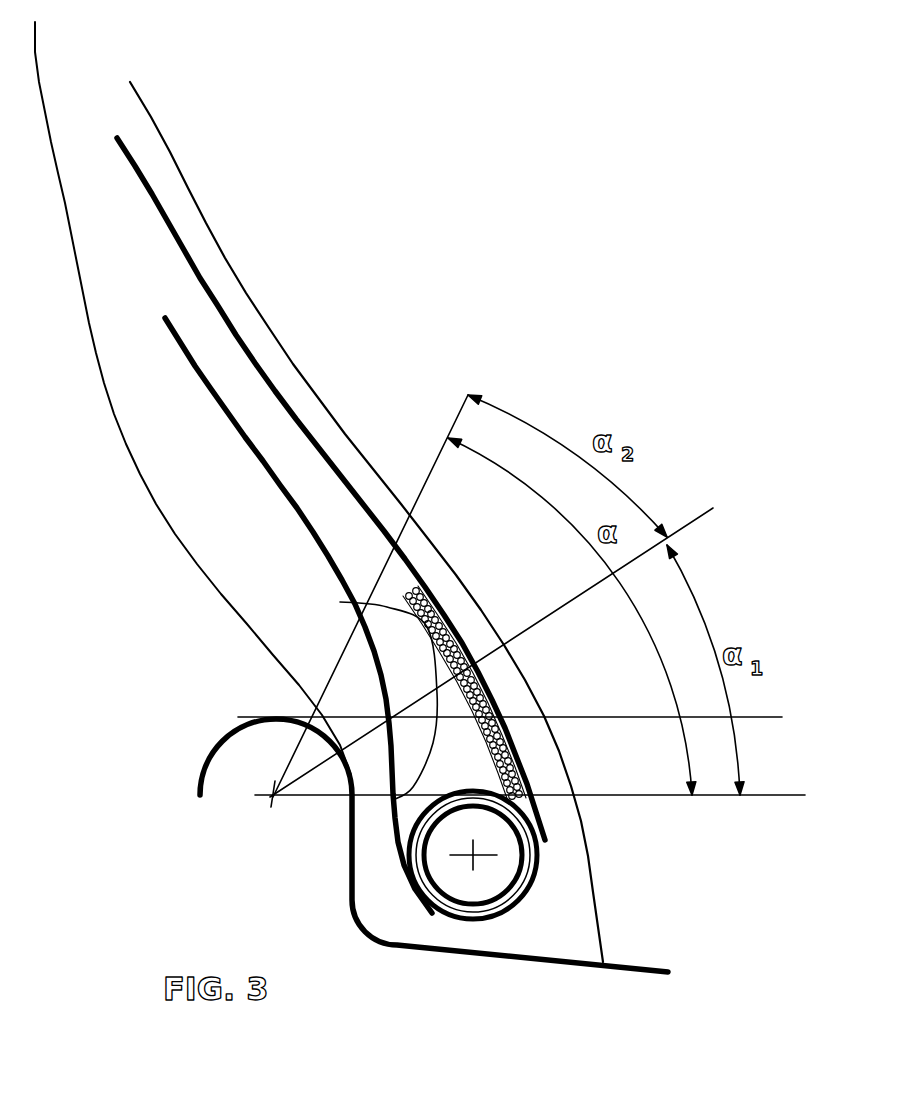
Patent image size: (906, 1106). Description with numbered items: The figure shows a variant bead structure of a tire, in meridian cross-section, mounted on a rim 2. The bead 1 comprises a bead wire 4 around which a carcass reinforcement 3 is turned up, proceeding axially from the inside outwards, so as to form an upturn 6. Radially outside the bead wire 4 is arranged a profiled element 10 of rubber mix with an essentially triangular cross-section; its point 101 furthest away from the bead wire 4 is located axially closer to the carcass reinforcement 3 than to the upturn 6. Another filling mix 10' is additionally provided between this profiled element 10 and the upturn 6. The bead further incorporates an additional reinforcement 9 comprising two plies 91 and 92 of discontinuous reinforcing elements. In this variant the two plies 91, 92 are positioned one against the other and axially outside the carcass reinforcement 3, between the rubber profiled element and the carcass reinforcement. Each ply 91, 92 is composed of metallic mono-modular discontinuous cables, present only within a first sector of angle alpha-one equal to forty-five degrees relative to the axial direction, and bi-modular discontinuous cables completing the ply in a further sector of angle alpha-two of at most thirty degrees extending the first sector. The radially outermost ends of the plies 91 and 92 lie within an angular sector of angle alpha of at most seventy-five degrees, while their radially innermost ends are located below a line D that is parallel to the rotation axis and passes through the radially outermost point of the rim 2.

The bead 1 is at (565, 876).
The rim 2 is at (352, 893).
The carcass reinforcement 3 is at (280, 350).
The bead wire 4 is at (473, 870).
The upturn 6 is at (294, 500).
The additional reinforcement 9 is at (525, 716).
The first ply 91 is at (523, 668).
The second ply 92 is at (483, 628).
The profiled element 10 is at (459, 745).
The filling mix 10' is at (408, 645).
The point of the profiled element 101 is at (340, 602).
The line D is at (517, 705).